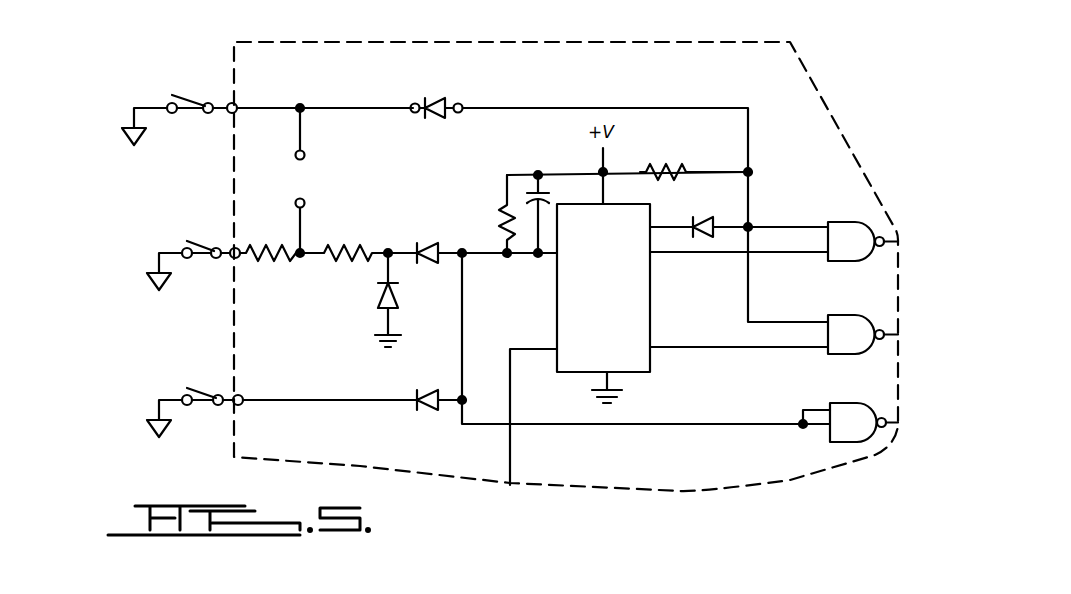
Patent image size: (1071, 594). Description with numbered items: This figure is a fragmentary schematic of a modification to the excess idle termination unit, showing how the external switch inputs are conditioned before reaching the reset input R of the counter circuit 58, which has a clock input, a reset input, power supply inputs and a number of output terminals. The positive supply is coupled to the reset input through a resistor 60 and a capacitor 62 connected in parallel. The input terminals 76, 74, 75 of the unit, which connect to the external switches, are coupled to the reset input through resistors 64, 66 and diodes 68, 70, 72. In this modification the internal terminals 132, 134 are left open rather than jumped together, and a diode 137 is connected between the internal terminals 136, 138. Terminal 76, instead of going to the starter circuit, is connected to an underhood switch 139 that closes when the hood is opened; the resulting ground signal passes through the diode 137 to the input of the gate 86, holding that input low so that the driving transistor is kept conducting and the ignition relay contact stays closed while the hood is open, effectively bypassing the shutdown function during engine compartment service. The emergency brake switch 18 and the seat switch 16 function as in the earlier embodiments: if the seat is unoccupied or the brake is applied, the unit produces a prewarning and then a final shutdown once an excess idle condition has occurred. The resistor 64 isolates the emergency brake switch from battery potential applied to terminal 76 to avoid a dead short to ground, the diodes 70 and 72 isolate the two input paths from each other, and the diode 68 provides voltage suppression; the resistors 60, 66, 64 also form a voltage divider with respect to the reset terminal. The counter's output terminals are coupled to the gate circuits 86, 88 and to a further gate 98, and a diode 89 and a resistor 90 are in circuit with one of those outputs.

The terminal T6 76 is at (229, 104).
The underhood switch 139 is at (184, 113).
The internal terminal 132 is at (304, 156).
The internal terminal 134 is at (304, 201).
The internal terminal 136 is at (411, 106).
The diode 137 is at (432, 100).
The internal terminal 138 is at (463, 102).
The input terminal 74 is at (232, 250).
The emergency brake switch 18 is at (198, 258).
The resistor 64 is at (275, 258).
The resistor 66 is at (348, 258).
The diode 68 is at (378, 305).
The diode 70 is at (432, 247).
The seat switch 16 is at (212, 390).
The input terminal 75 is at (236, 404).
The diode 72 is at (430, 414).
The resistor 60 is at (500, 210).
The capacitor 62 is at (522, 200).
The counter circuit 58 is at (654, 372).
The resistor 90 is at (672, 165).
The diode 89 is at (707, 222).
The gate circuit 86 is at (833, 222).
The gate circuit 88 is at (838, 315).
The gate circuit 98 is at (840, 403).